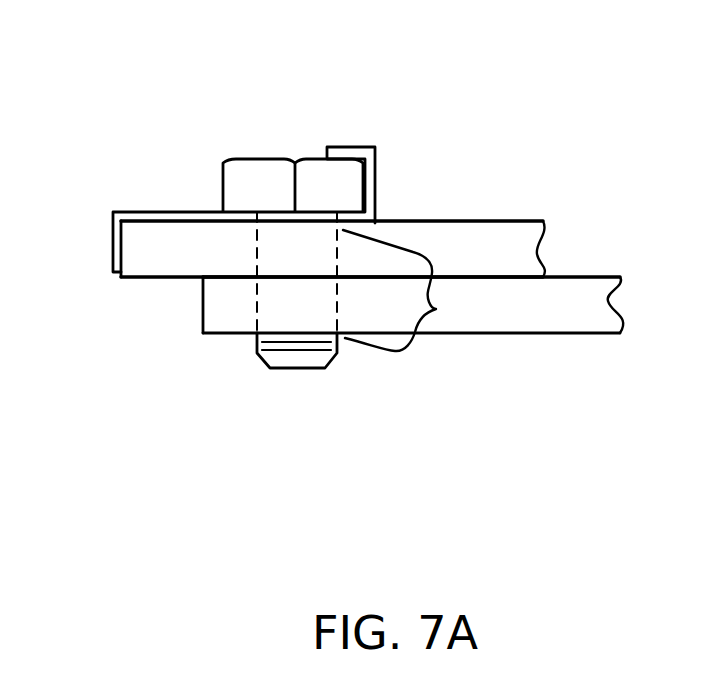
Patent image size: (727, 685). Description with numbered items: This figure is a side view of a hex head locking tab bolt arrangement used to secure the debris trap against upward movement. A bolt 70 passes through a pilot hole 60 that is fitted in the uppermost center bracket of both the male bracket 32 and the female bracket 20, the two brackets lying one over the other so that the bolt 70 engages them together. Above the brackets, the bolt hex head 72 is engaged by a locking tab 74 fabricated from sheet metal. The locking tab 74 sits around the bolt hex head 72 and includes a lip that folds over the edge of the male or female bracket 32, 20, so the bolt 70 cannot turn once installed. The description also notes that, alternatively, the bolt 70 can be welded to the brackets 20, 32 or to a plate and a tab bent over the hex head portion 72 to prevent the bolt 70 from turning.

The female bracket 20 is at (213, 313).
The male bracket 32 is at (150, 242).
The pilot hole 60 is at (436, 309).
The bolt 70 is at (306, 368).
The bolt hex head 72 is at (275, 178).
The locking tab 74 is at (183, 212).